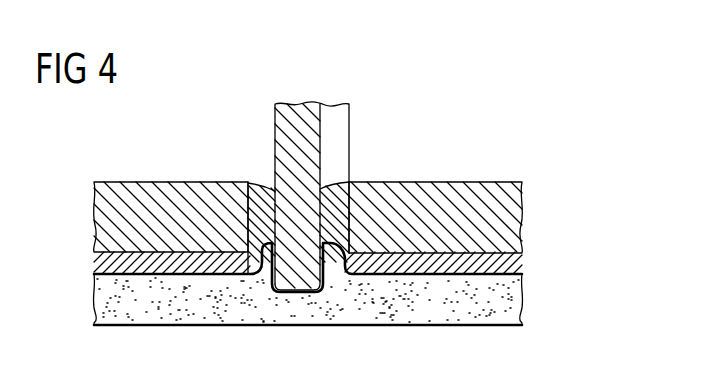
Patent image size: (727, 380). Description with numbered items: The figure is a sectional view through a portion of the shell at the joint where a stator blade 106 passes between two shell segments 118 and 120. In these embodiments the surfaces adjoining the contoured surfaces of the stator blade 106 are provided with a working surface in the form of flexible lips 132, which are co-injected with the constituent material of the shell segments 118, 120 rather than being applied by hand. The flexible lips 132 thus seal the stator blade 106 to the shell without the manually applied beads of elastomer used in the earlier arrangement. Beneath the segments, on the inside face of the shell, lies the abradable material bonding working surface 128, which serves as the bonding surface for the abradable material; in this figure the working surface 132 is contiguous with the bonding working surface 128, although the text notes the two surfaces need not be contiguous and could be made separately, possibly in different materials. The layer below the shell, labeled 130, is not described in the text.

The stator blade 106 is at (294, 104).
The shell segment 118 is at (146, 193).
The shell segment 120 is at (453, 190).
The abradable material bonding working surface 128 is at (104, 262).
The substrate 130 is at (98, 302).
The flexible lips 132 is at (262, 190).